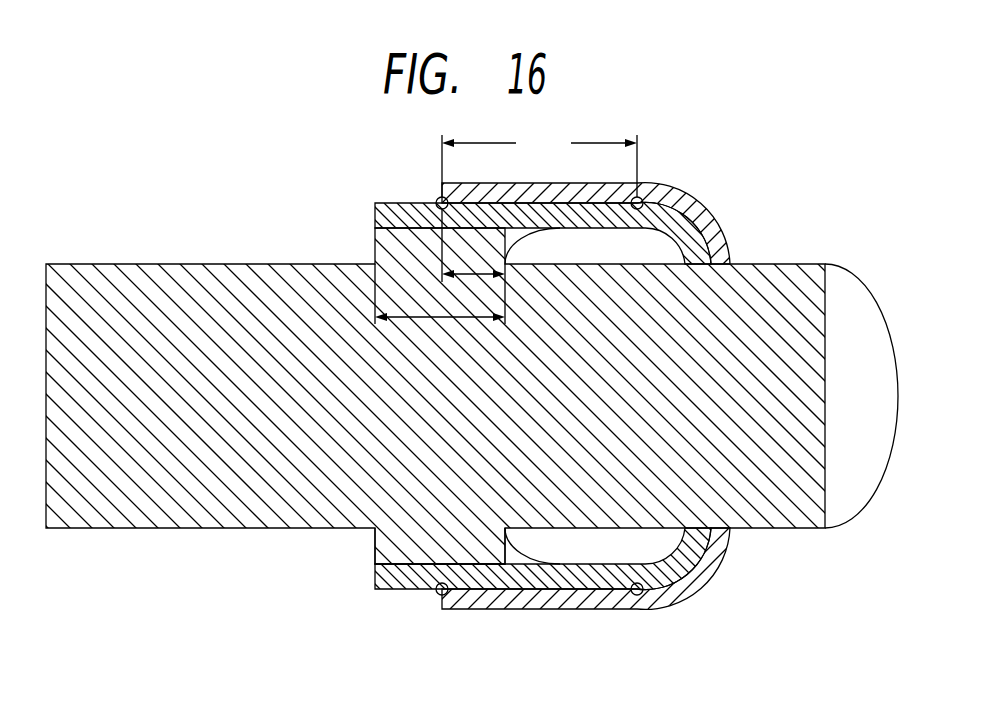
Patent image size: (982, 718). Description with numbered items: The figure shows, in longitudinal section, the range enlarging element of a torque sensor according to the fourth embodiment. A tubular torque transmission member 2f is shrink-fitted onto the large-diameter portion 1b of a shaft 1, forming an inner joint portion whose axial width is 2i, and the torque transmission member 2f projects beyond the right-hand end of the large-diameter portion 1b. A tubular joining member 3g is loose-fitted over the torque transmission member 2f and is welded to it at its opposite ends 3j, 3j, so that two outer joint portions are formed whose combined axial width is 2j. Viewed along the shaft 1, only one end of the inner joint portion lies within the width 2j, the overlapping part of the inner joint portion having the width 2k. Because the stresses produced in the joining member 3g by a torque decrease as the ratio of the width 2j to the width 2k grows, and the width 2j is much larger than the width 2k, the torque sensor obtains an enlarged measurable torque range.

The shaft 1 is at (263, 268).
The large-diameter portion 1b is at (392, 533).
The tubular torque transmission member 2f is at (687, 247).
The width of the inner joint portion 2i is at (440, 294).
The width of the outer joint portions 2j is at (539, 162).
The width of a part of the inner joint portion 2k is at (473, 245).
The tubular joining member 3g is at (683, 211).
The opposite ends of the joining member 3j is at (437, 201).